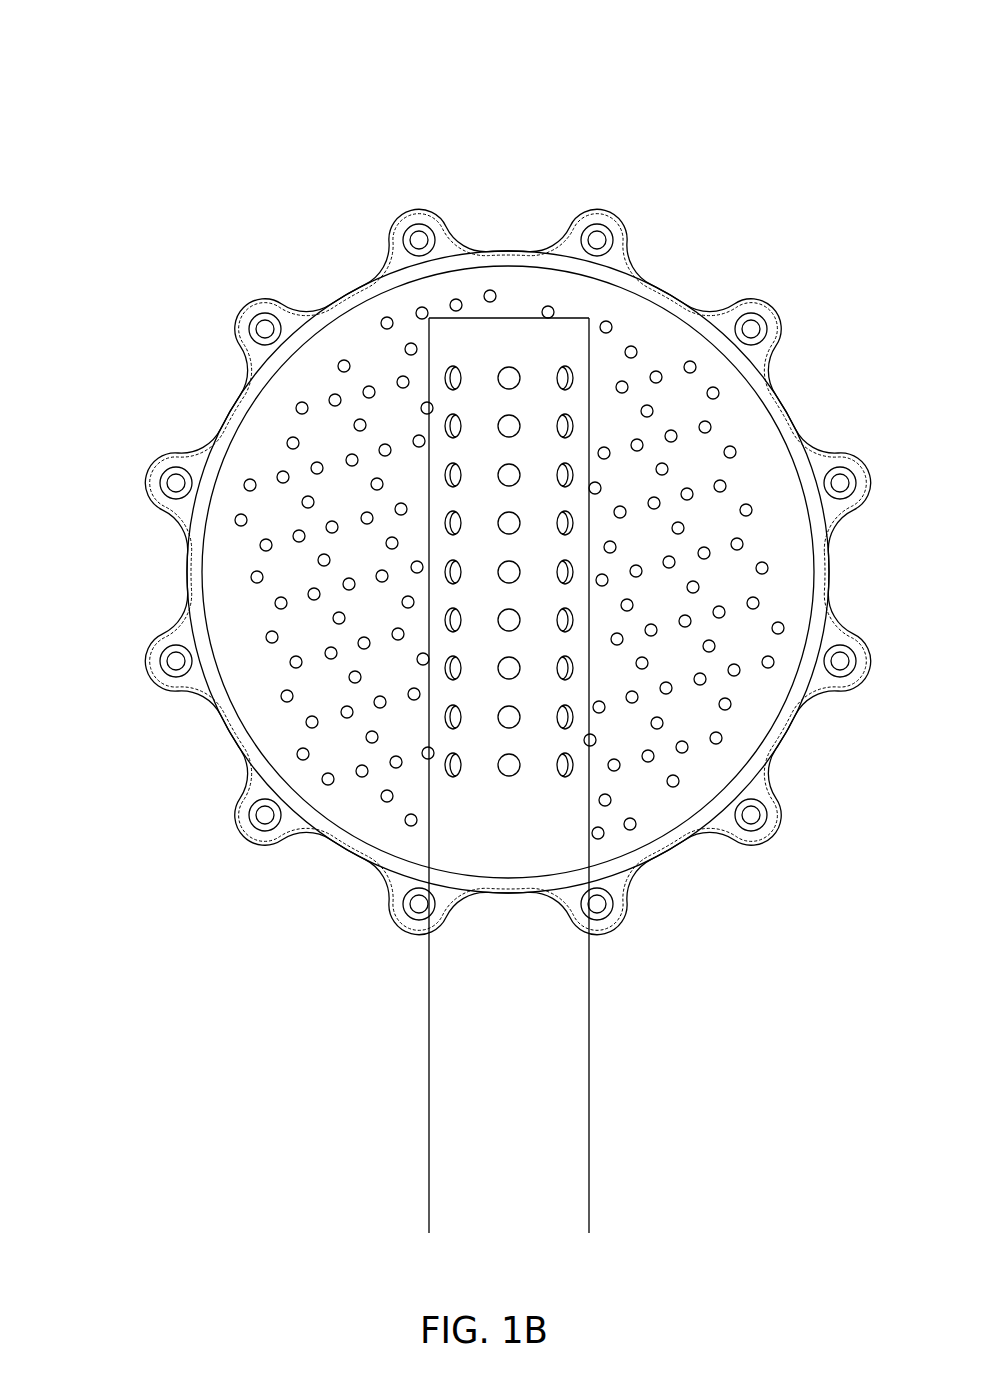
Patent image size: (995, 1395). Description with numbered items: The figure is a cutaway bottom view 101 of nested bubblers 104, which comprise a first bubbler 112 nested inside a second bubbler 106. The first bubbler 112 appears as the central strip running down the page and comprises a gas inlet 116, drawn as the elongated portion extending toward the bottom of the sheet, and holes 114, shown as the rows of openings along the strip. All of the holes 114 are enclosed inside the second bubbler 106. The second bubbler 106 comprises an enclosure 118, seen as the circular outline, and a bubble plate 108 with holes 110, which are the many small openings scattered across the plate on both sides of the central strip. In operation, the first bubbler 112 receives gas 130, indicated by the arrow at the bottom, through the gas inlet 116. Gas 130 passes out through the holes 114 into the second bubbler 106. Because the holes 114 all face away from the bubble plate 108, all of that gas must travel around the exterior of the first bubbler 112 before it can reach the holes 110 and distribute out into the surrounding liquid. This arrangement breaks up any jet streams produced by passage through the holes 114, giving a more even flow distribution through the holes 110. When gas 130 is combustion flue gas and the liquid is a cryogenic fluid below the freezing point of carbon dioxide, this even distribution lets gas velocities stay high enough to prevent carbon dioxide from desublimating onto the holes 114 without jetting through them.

The cutaway bottom view 101 is at (125, 79).
The nested bubblers 104 is at (243, 308).
The second bubbler 106 is at (253, 457).
The bubble plate 108 is at (430, 290).
The holes 110 is at (385, 320).
The first bubbler 112 is at (517, 330).
The holes 114 is at (513, 372).
The gas inlet 116 is at (587, 1141).
The enclosure 118 is at (198, 580).
The gas 130 is at (515, 1200).